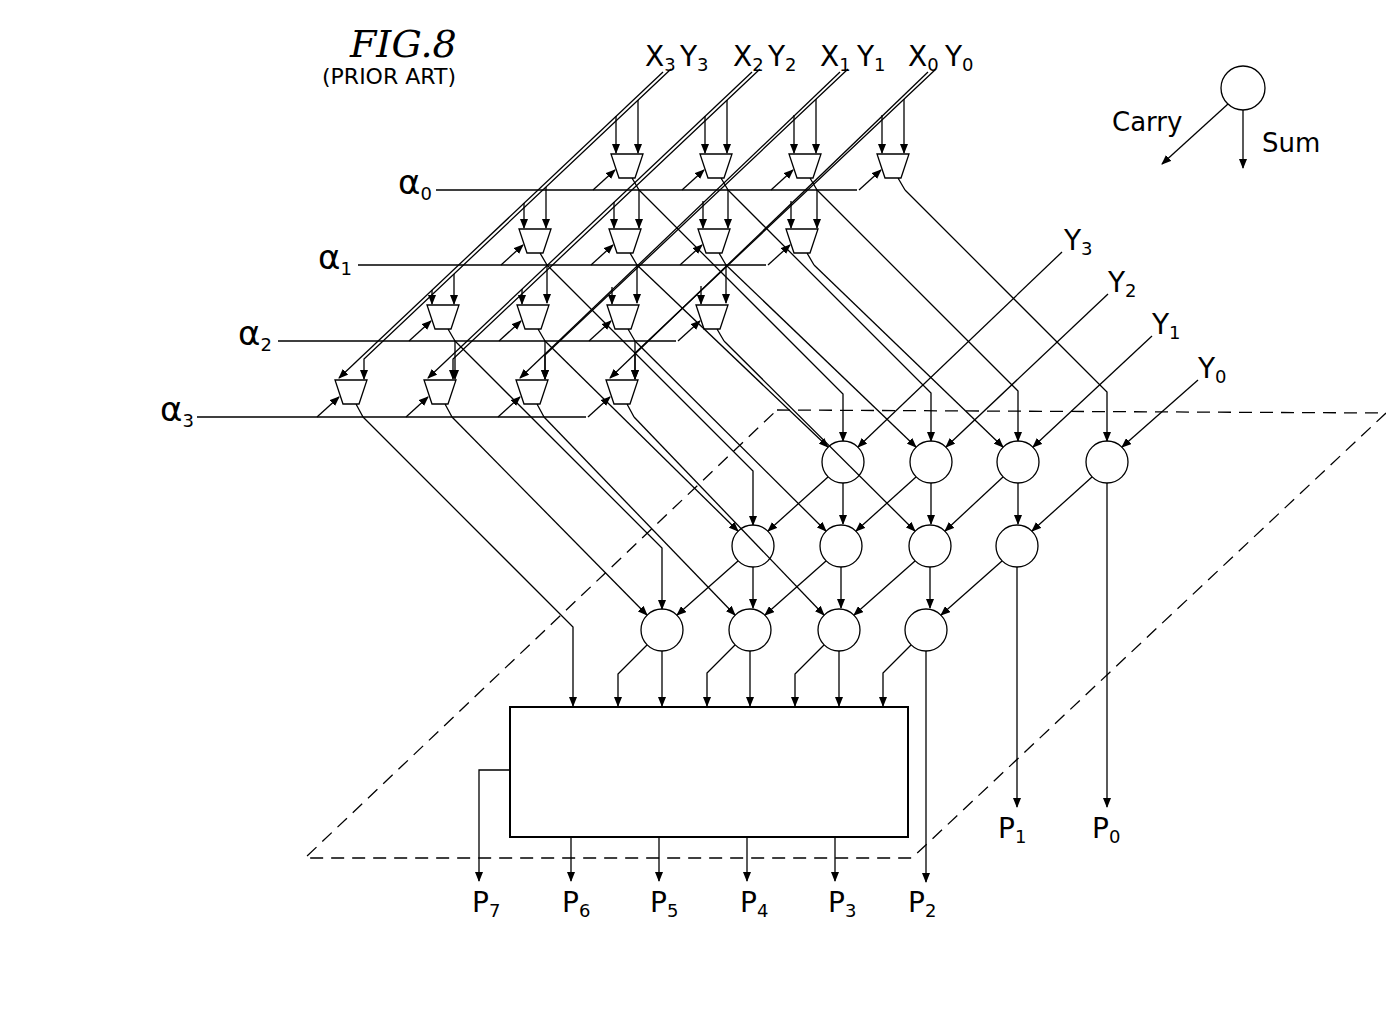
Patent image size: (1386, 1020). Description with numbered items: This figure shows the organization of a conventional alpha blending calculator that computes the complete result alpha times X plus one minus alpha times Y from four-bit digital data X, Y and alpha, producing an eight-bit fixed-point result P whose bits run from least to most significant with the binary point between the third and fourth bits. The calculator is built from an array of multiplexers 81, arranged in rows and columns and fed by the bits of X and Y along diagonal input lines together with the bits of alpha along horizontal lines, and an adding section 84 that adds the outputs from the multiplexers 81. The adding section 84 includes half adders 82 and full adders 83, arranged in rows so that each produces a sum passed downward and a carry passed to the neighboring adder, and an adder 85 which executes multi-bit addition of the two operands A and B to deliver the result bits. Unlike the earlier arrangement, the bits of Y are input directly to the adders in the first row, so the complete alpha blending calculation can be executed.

The multiplexer 81 is at (905, 172).
The half adder 82 is at (1038, 556).
The full adder 83 is at (854, 661).
The adding section 84 is at (507, 662).
The adder 85 is at (508, 745).